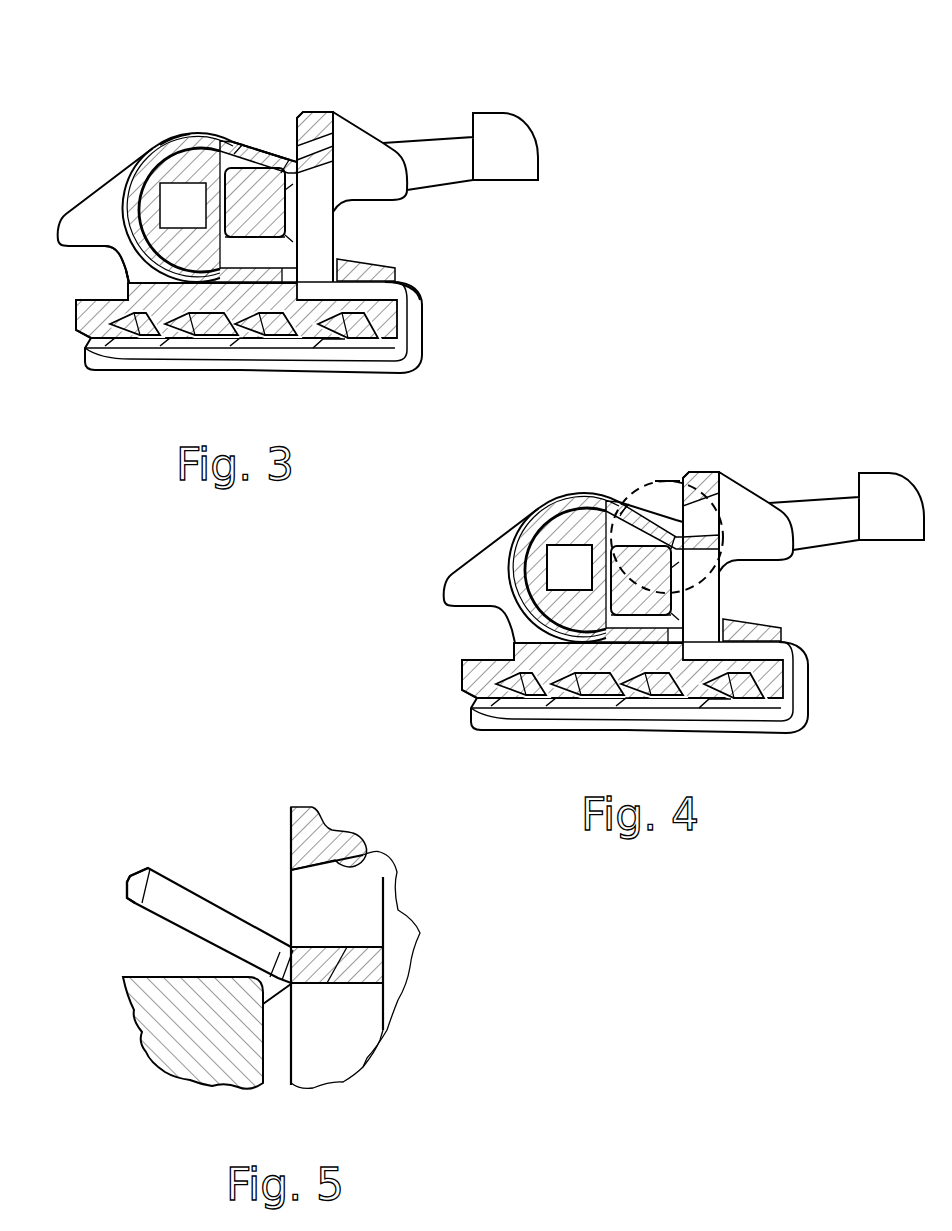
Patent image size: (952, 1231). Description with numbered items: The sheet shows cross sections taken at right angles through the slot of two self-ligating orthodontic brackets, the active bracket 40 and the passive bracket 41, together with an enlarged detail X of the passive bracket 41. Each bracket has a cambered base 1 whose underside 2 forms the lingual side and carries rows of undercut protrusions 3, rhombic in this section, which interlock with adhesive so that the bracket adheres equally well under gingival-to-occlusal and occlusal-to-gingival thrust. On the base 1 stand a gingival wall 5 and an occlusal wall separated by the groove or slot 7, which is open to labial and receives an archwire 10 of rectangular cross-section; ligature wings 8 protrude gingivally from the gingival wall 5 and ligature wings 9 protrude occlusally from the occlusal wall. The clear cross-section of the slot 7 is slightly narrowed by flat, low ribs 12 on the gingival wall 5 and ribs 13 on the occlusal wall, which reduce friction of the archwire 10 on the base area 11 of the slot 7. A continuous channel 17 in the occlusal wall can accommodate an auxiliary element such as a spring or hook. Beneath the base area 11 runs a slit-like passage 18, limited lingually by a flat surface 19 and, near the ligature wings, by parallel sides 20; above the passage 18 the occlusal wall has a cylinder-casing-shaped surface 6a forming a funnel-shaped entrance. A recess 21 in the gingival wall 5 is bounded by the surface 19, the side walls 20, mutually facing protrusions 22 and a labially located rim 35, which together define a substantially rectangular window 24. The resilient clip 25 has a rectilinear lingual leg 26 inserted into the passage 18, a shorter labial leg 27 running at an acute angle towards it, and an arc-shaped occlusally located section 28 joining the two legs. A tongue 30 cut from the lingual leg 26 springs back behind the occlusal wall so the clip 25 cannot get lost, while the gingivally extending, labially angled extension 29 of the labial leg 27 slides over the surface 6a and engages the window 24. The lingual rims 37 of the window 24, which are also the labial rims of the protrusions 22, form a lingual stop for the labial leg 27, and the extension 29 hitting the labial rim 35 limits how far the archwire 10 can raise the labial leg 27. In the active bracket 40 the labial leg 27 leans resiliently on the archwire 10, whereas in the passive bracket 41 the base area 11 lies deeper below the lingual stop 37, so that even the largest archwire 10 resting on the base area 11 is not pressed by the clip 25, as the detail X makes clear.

In FIG. 3, the base 1 is at (415, 355).
In FIG. 3, the underside 2 is at (143, 371).
In FIG. 3, the protrusions 3 is at (322, 340).
In FIG. 5, the gingival wall 5 is at (330, 845).
In FIG. 3, the cylinder-casing-shaped surface 6a is at (153, 165).
In FIG. 3, the groove (slot) 7 is at (262, 125).
In FIG. 4, the groove (slot) 7 is at (657, 462).
In FIG. 3, the ligature wings 8 is at (405, 200).
In FIG. 3, the ligature wings 9 is at (75, 225).
In FIG. 3, the archwire 10 is at (258, 165).
In FIG. 5, the archwire 10 is at (207, 1063).
In FIG. 3, the base area 11 is at (248, 250).
In FIG. 4, the base area 11 is at (628, 620).
In FIG. 3, the ribs 12 is at (292, 222).
In FIG. 5, the ribs 12 is at (275, 1075).
In FIG. 3, the ribs 13 is at (218, 140).
In FIG. 3, the channel 17 is at (170, 224).
In FIG. 3, the passage 18 is at (130, 270).
In FIG. 3, the surface 19 is at (105, 312).
In FIG. 3, the sides (side walls) 20 is at (118, 246).
In FIG. 3, the recess 21 is at (372, 270).
In FIG. 3, the protrusions 22 is at (334, 253).
In FIG. 5, the protrusions 22 is at (327, 1060).
In FIG. 3, the window 24 is at (325, 168).
In FIG. 5, the window 24 is at (380, 899).
In FIG. 3, the clip 25 is at (180, 135).
In FIG. 5, the clip 25 is at (145, 898).
In FIG. 3, the lingual leg 26 is at (398, 283).
In FIG. 3, the labial leg 27 is at (250, 137).
In FIG. 5, the labial leg 27 is at (165, 870).
In FIG. 3, the occlusally located section 28 is at (135, 192).
In FIG. 3, the extension 29 is at (303, 162).
In FIG. 5, the extension 29 is at (365, 963).
In FIG. 3, the tongue 30 is at (400, 312).
In FIG. 3, the labially located rim 35 is at (322, 128).
In FIG. 5, the labially located rim 35 is at (363, 860).
In FIG. 3, the lingual rims (lingual stop) 37 is at (322, 152).
In FIG. 5, the lingual rims (lingual stop) 37 is at (373, 987).
In FIG. 3, the active bracket 40 is at (565, 152).
In FIG. 4, the passive bracket 41 is at (410, 592).
In FIG. 4, the detail X is at (667, 478).